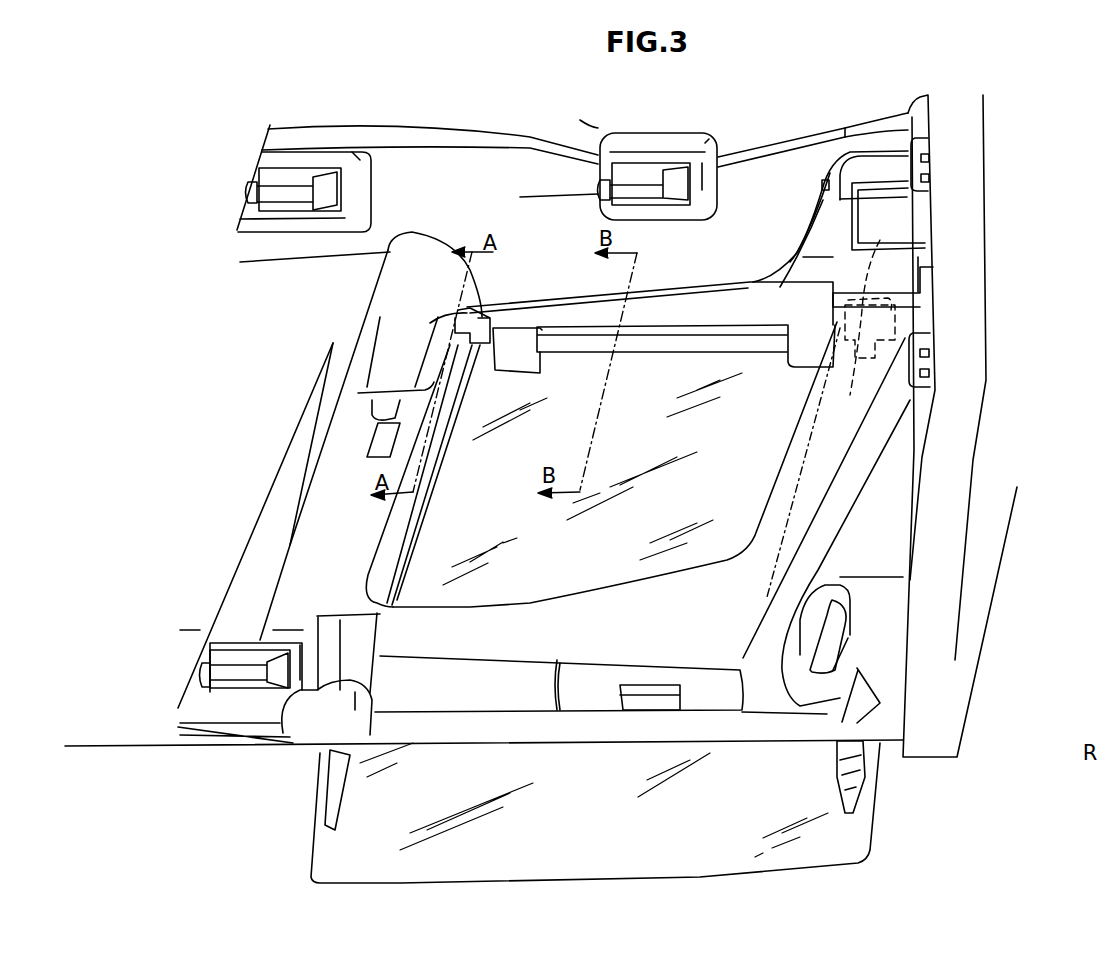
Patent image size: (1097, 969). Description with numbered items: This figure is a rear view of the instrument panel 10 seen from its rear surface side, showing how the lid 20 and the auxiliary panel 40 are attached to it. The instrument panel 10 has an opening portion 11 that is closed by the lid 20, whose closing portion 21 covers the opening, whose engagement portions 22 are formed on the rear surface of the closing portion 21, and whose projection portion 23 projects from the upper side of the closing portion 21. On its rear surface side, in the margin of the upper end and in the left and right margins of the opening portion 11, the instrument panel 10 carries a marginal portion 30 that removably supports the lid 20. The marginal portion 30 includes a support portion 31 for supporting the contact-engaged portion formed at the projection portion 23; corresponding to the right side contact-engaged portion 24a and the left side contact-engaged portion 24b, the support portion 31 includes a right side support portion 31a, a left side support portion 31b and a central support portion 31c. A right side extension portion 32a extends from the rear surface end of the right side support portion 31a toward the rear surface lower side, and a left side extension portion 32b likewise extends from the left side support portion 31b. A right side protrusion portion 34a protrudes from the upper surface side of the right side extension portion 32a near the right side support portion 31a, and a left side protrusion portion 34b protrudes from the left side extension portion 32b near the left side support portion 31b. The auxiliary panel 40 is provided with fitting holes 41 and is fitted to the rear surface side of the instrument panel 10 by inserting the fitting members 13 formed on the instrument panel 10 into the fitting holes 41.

The instrument panel 10 is at (827, 227).
The opening portion 11 is at (740, 505).
The fitting member 13 is at (307, 190).
The lid 20 is at (427, 557).
The closing portion 21 is at (340, 862).
The engagement portion 22 is at (317, 777).
The projection portion 23 is at (755, 300).
The right side contact-engaged portion 24a is at (490, 320).
The left side contact-engaged portion 24b is at (880, 240).
The marginal portion 30 is at (458, 453).
The support portion 31 is at (582, 323).
The right side support portion 31a is at (472, 327).
The left side support portion 31b is at (890, 302).
The central support portion 31c is at (720, 335).
The right side extension portion 32a is at (390, 567).
The left side extension portion 32b is at (820, 470).
The right side protrusion portion 34a is at (470, 330).
The left side protrusion portion 34b is at (868, 312).
The auxiliary panel 40 is at (738, 603).
The fitting hole 41 is at (290, 184).